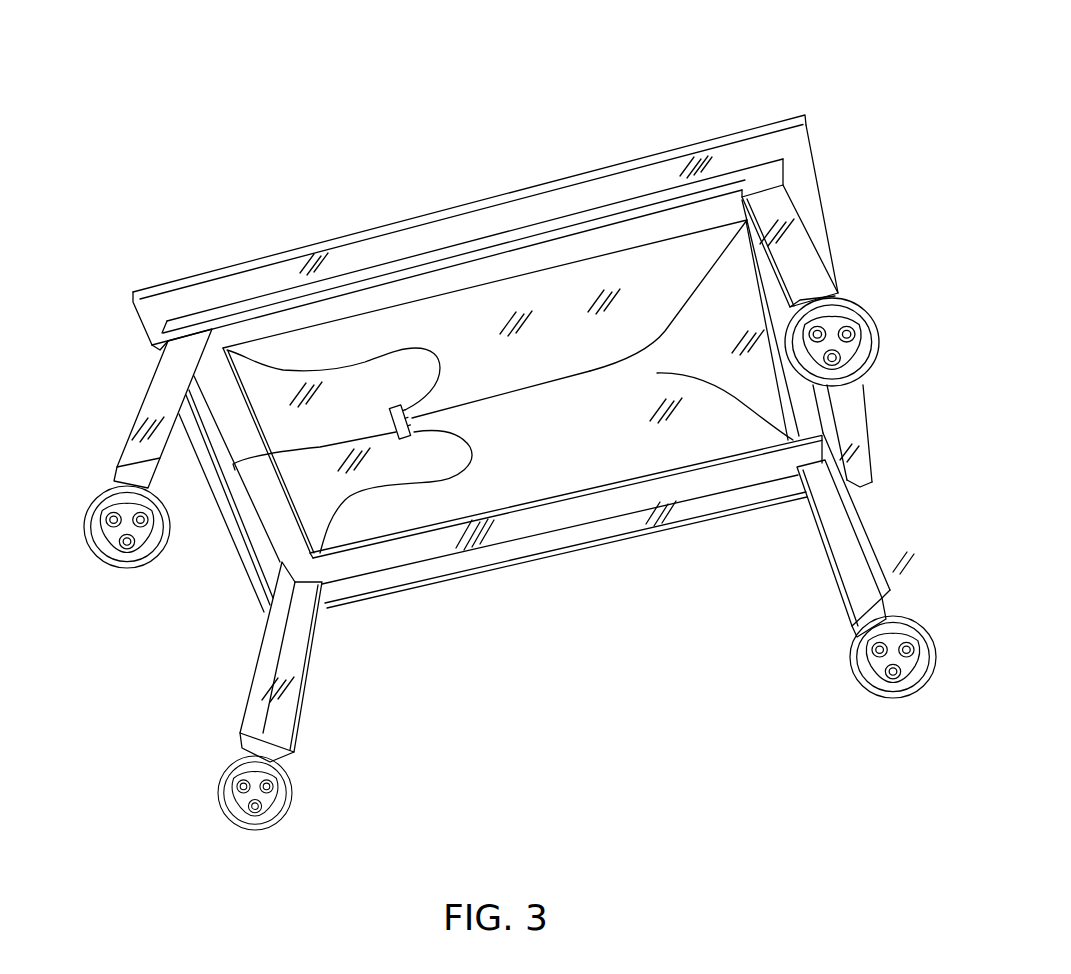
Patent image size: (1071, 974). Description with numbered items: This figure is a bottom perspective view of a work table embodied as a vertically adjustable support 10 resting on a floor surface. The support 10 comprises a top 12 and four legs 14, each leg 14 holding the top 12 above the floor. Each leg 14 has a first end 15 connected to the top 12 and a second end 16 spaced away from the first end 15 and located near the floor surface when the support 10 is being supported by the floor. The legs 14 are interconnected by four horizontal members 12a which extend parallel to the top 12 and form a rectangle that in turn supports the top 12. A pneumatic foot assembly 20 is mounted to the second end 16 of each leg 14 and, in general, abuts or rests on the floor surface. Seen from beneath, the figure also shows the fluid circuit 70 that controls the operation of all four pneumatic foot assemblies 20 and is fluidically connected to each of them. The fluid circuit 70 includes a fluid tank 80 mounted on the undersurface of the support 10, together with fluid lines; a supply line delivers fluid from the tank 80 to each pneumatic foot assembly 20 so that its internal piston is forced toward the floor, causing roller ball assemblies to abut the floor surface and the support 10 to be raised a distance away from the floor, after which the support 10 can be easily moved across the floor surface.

The vertically adjustable support 10 is at (378, 157).
The top 12 is at (640, 157).
The horizontal members 12a is at (308, 290).
The leg 14 is at (798, 253).
The first end 15 is at (787, 185).
The second end 16 is at (838, 292).
The pneumatic foot assembly 20 is at (897, 366).
The fluid circuit 70 is at (494, 426).
The fluid tank 80 is at (392, 410).